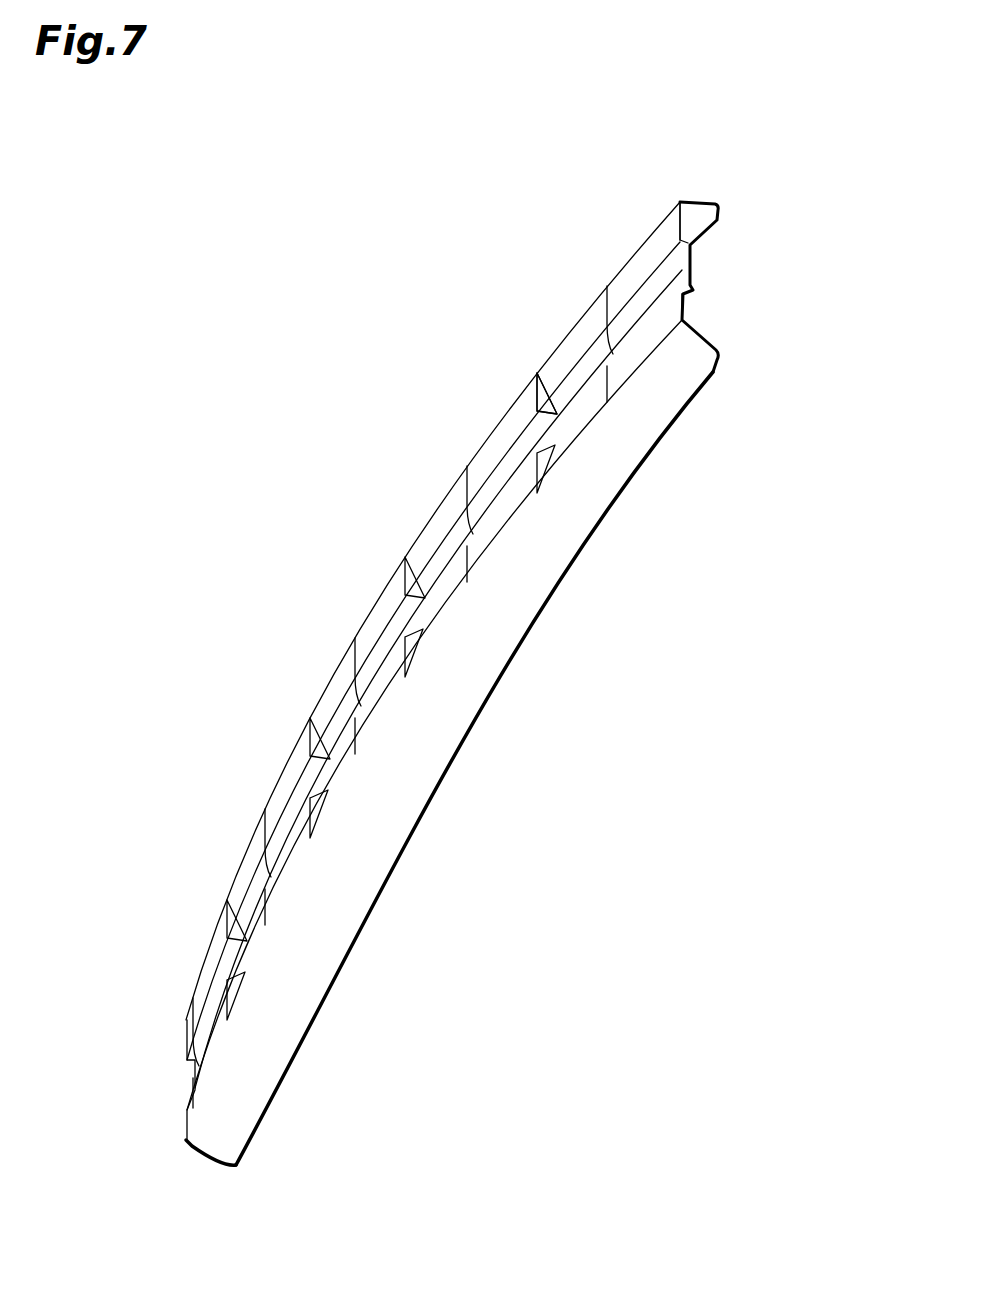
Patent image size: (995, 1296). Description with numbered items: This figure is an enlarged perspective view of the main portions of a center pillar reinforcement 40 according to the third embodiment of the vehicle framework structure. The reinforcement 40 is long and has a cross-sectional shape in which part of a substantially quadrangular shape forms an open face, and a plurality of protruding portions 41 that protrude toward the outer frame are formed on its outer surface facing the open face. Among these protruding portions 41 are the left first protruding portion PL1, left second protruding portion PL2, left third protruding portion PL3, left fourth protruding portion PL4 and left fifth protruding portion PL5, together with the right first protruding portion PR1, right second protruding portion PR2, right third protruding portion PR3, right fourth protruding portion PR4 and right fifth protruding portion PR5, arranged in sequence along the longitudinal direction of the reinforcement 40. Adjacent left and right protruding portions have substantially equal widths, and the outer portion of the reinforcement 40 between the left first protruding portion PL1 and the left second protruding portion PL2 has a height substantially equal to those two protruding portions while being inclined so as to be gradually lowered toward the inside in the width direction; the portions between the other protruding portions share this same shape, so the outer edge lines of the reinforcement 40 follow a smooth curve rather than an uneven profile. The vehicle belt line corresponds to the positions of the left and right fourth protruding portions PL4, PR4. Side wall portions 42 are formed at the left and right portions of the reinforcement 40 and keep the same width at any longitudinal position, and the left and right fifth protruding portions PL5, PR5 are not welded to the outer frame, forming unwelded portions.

The reinforcement 40 is at (414, 482).
The protruding portions 41 is at (539, 350).
The side wall portions 42 is at (458, 700).
The left first protruding portion PL1 is at (645, 255).
The left second protruding portion PL2 is at (500, 437).
The left third protruding portion PL3 is at (372, 627).
The left fourth protruding portion PL4 is at (280, 793).
The left fifth protruding portion PL5 is at (197, 1003).
The right first protruding portion PR1 is at (648, 343).
The right second protruding portion PR2 is at (511, 510).
The right third protruding portion PR3 is at (372, 735).
The right fourth protruding portion PR4 is at (283, 880).
The right fifth protruding portion PR5 is at (205, 1062).